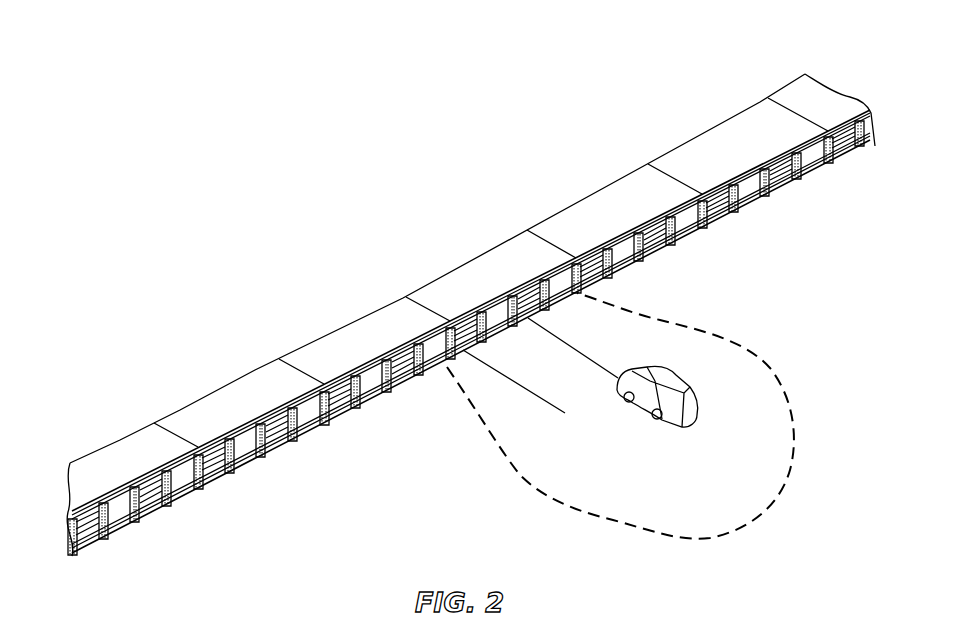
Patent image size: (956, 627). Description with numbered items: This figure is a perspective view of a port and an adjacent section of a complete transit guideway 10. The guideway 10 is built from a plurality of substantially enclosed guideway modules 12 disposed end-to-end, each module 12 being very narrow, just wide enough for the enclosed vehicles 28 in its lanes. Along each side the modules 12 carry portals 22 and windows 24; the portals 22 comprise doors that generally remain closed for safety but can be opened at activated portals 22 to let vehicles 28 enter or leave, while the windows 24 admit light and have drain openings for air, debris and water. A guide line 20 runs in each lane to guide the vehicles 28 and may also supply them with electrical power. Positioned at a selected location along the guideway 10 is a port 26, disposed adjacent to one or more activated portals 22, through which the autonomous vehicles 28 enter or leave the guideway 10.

The transit guideway 10 is at (265, 306).
The guideway module 12 is at (222, 410).
The guide line 20 is at (598, 366).
The portal 22 is at (545, 312).
The window 24 is at (490, 312).
The port 26 is at (713, 325).
The vehicle 28 is at (675, 378).